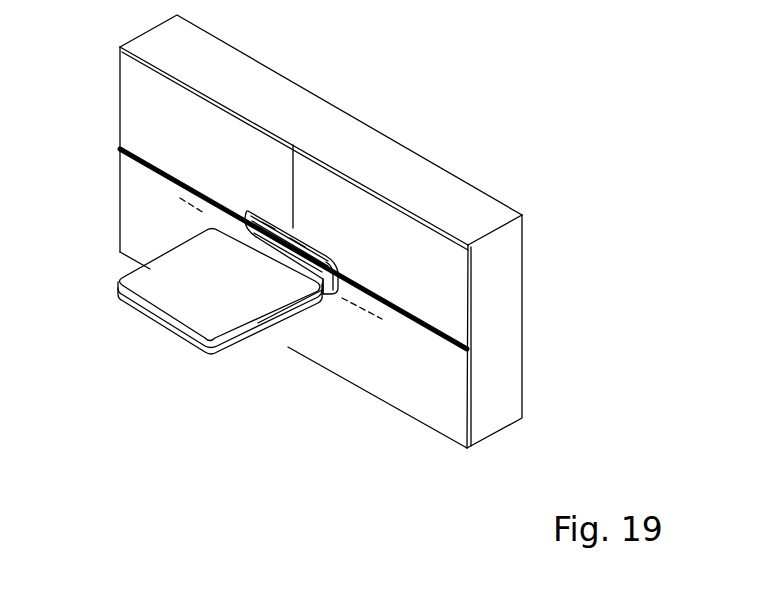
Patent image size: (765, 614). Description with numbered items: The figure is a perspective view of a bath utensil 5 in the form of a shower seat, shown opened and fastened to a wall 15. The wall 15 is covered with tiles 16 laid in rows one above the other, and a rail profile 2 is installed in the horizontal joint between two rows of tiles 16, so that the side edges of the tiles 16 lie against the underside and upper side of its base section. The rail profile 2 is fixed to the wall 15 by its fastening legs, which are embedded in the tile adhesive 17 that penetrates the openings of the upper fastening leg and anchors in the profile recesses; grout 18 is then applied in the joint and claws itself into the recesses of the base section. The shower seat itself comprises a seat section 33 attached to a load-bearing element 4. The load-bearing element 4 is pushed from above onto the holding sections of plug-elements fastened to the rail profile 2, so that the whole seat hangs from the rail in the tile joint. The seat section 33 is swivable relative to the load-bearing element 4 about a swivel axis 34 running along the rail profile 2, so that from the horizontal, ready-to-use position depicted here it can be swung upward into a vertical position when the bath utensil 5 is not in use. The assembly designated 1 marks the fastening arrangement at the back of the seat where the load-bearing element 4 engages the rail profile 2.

The fastening device 1 is at (273, 213).
The rail profile 2 is at (345, 270).
The load-bearing element 4 is at (304, 234).
The bath utensil 5 is at (150, 335).
The wall 15 is at (505, 302).
The tiles 16 is at (207, 125).
The tile adhesive 17 is at (467, 323).
The grout 18 is at (292, 190).
The seat section 33 is at (207, 313).
The swivel axis 34 is at (350, 297).